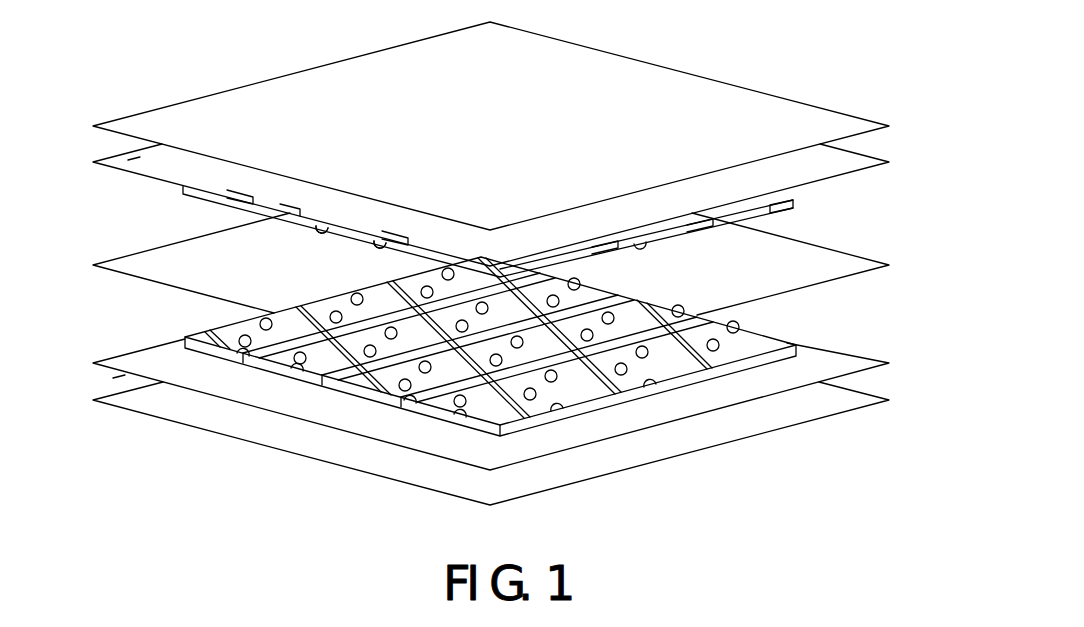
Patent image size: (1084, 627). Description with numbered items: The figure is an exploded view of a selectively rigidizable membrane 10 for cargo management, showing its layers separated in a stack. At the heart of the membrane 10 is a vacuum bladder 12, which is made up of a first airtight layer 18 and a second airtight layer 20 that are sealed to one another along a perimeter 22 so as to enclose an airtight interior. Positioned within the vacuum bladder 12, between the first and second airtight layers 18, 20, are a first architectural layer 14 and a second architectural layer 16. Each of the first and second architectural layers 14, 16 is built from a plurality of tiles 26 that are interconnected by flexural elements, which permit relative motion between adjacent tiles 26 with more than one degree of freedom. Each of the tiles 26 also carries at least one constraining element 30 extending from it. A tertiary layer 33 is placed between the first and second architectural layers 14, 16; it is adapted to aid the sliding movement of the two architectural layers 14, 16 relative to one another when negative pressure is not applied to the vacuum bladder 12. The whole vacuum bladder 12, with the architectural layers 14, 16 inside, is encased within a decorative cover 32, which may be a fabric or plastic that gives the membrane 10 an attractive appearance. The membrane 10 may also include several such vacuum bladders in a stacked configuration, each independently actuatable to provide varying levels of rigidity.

The selectively rigidizable membrane 10 is at (233, 470).
The vacuum bladder 12 is at (526, 307).
The first architectural layer 14 is at (749, 209).
The second architectural layer 16 is at (650, 313).
The first airtight layer 18 is at (806, 162).
The second airtight layer 20 is at (813, 362).
The perimeter 22 is at (128, 160).
The tiles 26 is at (380, 243).
The constraining element 30 is at (330, 312).
The decorative cover 32 is at (746, 106).
The tertiary layer 33 is at (746, 265).